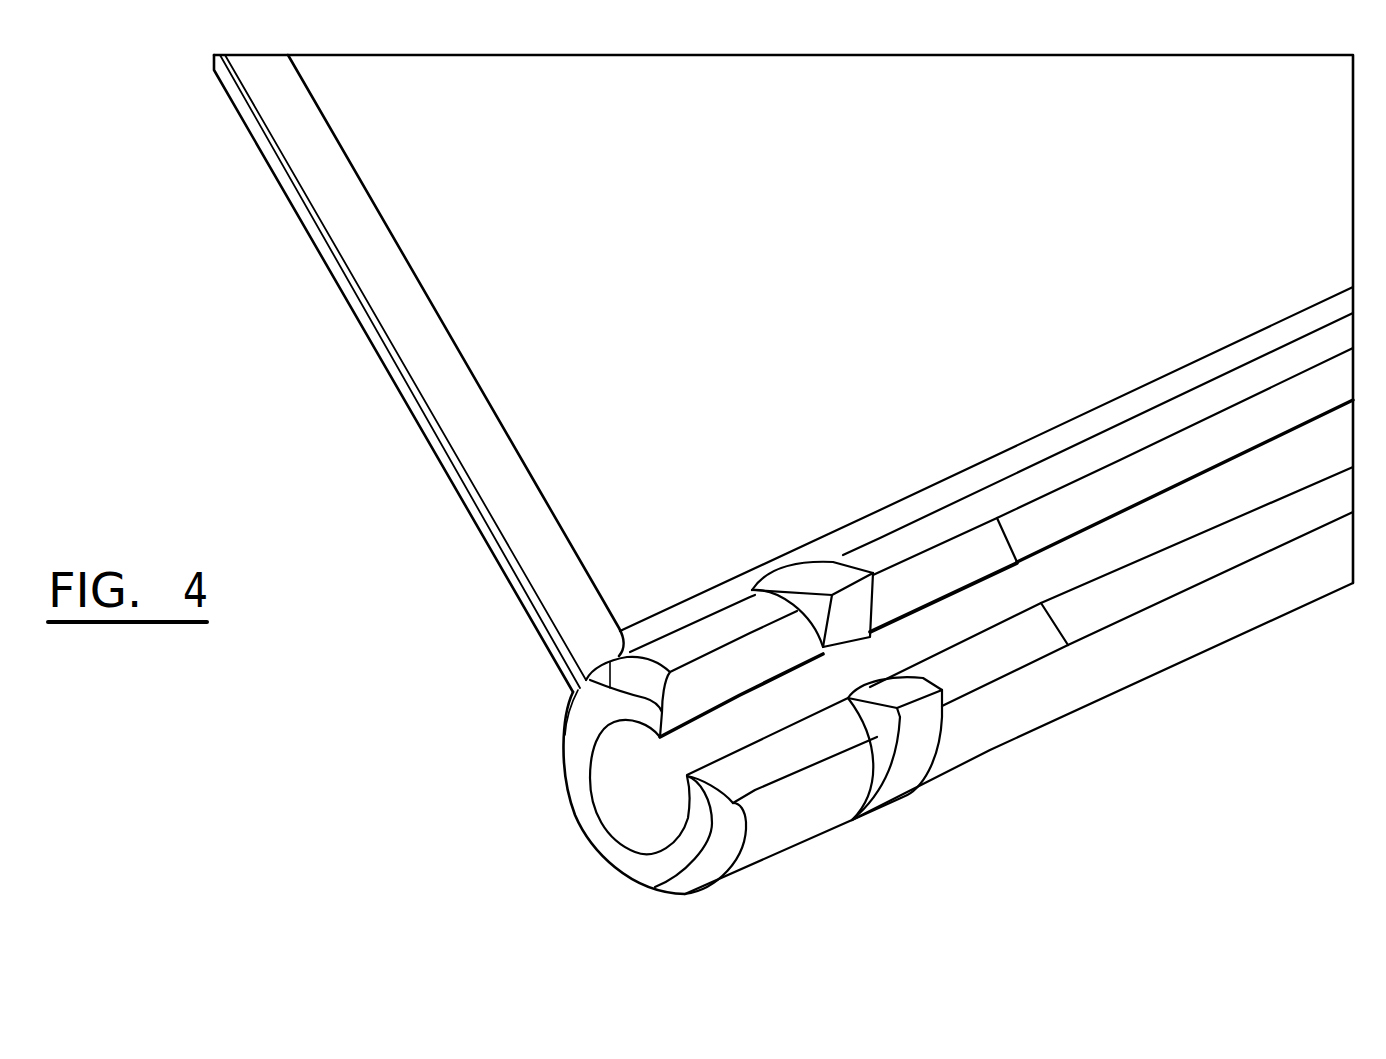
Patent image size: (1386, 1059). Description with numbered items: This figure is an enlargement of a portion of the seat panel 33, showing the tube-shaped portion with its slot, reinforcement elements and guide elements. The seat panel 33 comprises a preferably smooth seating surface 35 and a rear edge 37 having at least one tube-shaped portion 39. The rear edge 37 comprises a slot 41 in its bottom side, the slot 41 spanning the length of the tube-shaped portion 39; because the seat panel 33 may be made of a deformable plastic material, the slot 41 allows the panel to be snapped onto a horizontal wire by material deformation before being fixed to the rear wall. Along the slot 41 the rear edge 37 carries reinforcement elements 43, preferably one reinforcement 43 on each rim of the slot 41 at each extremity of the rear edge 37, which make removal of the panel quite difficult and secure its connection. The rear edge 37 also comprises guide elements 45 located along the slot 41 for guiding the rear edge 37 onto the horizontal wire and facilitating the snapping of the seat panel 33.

The seat panel 33 is at (313, 267).
The seating surface 35 is at (778, 175).
The rear edge 37 is at (1170, 686).
The tube-shaped portion 39 is at (583, 827).
The slot 41 is at (1253, 487).
The reinforcement element 43 is at (930, 565).
The guide element 45 is at (800, 572).